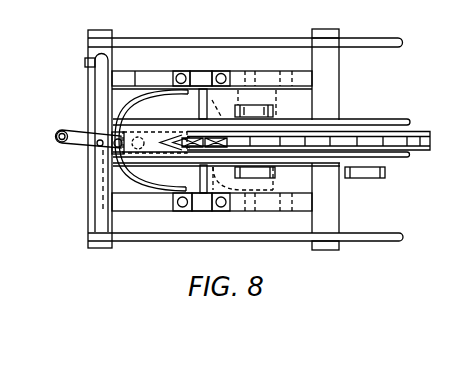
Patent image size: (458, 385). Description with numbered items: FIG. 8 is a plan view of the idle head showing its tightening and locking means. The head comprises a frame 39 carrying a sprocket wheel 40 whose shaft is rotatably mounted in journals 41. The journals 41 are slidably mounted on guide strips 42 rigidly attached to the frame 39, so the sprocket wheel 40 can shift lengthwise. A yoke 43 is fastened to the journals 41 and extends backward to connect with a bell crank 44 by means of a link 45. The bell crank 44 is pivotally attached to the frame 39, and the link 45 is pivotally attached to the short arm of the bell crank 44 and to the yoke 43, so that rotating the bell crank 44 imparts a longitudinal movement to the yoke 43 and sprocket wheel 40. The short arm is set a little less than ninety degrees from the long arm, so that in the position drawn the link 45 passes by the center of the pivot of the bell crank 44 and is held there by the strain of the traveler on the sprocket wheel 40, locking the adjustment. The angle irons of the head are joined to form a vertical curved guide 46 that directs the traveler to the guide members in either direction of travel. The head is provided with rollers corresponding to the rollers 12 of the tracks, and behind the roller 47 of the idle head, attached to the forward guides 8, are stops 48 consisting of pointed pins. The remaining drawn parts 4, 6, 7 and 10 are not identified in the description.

The frame post 4 is at (334, 106).
The top frame bar 6 is at (199, 42).
The lower guide bar 7 is at (400, 110).
The forward guides 8 is at (368, 120).
The toothed rail 10 is at (429, 135).
The rollers 12 is at (377, 178).
The frame 39 is at (298, 242).
The sprocket wheel 40 is at (133, 100).
The journals 41 is at (200, 205).
The guide strips 42 is at (145, 200).
The yoke 43 is at (55, 172).
The bell crank 44 is at (93, 133).
The link 45 is at (72, 144).
The vertical curved guide 46 is at (145, 265).
The roller 47 is at (250, 106).
The stops 48 is at (237, 93).